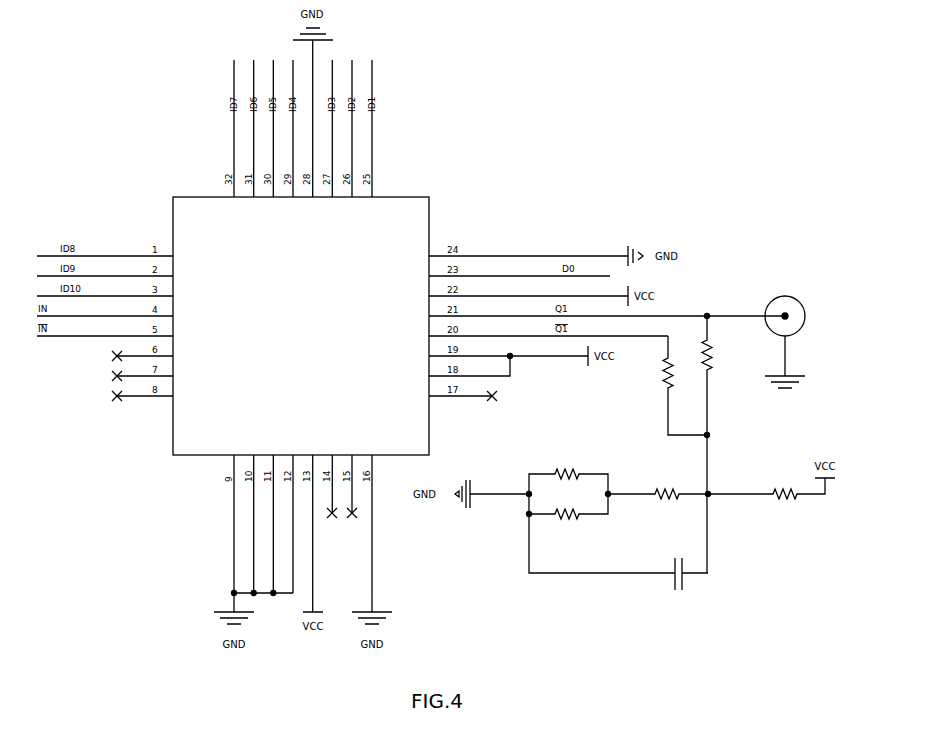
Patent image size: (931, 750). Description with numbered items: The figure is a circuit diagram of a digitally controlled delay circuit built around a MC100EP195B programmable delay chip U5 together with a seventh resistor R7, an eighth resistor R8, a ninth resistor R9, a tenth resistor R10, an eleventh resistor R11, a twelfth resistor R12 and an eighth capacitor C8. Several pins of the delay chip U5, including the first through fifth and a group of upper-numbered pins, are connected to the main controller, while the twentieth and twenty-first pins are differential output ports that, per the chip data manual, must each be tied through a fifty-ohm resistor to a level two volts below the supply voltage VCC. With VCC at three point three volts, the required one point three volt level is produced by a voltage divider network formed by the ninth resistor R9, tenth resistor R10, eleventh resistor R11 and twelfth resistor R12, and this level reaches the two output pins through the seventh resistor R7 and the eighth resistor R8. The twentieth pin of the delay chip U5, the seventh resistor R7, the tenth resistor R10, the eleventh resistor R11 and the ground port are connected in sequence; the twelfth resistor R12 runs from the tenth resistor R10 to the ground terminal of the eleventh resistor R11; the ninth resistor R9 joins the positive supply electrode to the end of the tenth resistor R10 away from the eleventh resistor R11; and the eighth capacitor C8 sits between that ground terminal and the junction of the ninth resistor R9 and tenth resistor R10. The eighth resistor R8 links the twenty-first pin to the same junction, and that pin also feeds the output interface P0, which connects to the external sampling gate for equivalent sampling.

The programmable delay chip U5 is at (375, 318).
The seventh resistor R7 is at (685, 385).
The eighth resistor R8 is at (714, 375).
The ninth resistor R9 is at (771, 486).
The 10th resistor R10 is at (658, 486).
The 11th resistor R11 is at (568, 476).
The 12th resistor R12 is at (568, 506).
The eighth capacitor C8 is at (618, 552).
The output interface P0 is at (785, 346).